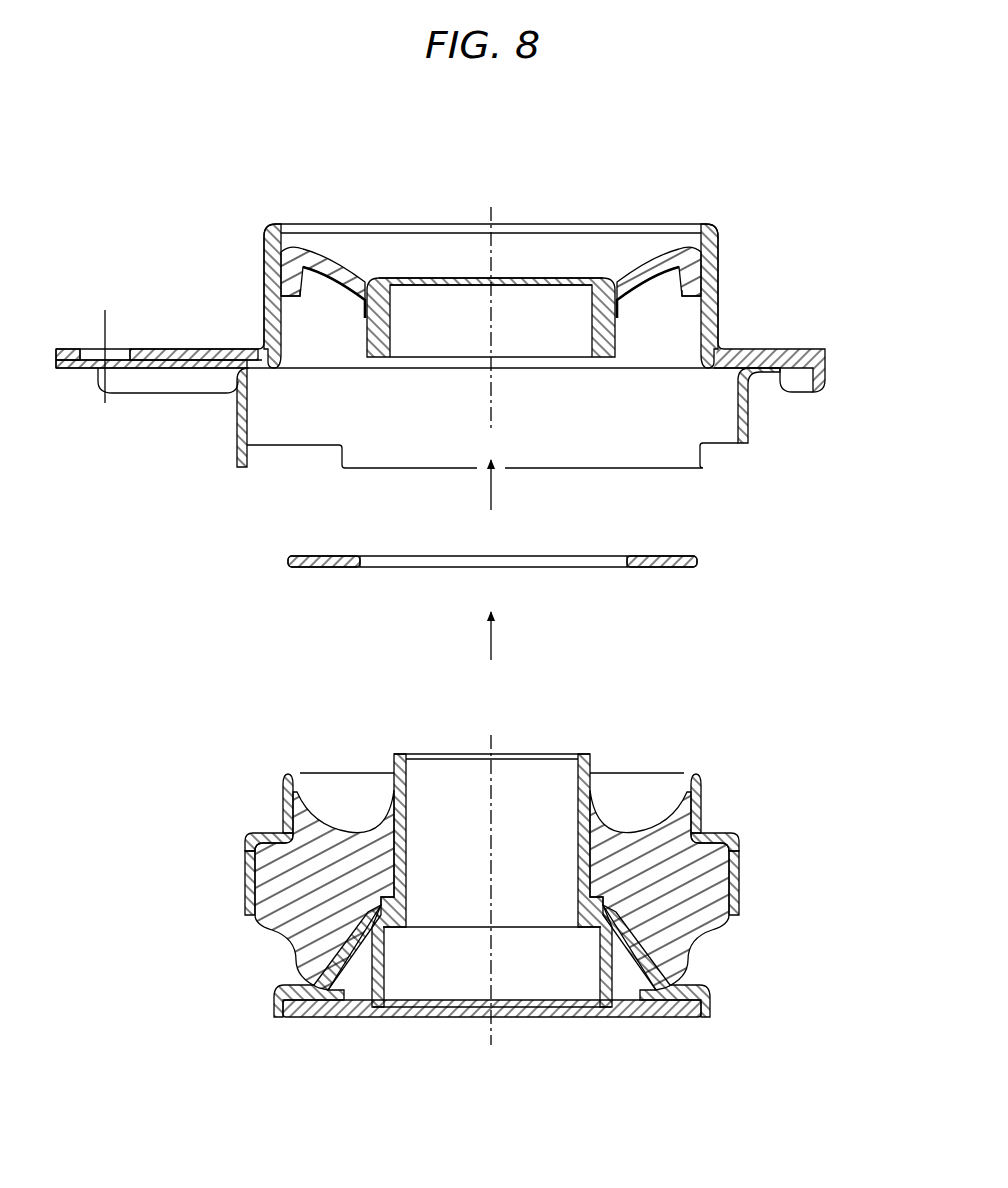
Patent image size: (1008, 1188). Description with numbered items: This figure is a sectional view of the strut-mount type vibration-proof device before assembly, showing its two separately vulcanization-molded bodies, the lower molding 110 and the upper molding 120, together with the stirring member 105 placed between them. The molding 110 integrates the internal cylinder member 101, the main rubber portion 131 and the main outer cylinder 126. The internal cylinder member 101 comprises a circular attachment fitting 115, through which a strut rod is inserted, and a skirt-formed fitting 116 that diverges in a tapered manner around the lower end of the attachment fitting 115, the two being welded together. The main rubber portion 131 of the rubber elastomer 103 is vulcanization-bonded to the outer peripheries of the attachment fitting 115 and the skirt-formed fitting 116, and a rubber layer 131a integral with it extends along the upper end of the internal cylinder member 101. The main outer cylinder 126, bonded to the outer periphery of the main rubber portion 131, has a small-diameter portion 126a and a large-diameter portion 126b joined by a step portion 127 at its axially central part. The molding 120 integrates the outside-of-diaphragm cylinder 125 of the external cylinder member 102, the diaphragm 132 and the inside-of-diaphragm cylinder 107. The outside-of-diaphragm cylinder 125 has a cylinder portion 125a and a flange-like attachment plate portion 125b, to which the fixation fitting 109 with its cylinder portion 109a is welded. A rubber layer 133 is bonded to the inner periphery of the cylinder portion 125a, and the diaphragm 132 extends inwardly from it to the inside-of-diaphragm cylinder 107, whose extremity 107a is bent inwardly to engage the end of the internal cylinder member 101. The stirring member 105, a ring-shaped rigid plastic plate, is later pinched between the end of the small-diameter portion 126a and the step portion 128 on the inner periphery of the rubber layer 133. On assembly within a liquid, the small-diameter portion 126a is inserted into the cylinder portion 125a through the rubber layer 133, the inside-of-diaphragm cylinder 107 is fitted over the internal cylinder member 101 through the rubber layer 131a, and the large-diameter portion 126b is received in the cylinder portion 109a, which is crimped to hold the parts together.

The internal cylinder member 101 is at (672, 1078).
The external cylinder member 102 is at (257, 233).
The rubber elastomer 103 is at (286, 937).
The stirring member 105 is at (678, 571).
The inside-of-diaphragm cylinder 107 is at (392, 310).
The top wall of inner tube 107a is at (596, 277).
The fixation fitting 109 is at (751, 425).
The cylinder portion 109a is at (238, 427).
The molding 110 is at (728, 790).
The attachment fitting 115 is at (580, 897).
The skirt-formed fitting 116 is at (648, 965).
The molding 120 is at (757, 220).
The outside-of-diaphragm cylinder 125 is at (845, 240).
The cylinder portion 125a is at (712, 270).
The attachment plate portion 125b is at (780, 350).
The main outer cylinder 126 is at (172, 745).
The small-diameter portion 126a is at (288, 790).
The large-diameter portion 126b is at (243, 873).
The step portion 127 is at (268, 830).
The step portion 128 is at (293, 298).
The main rubber portion 131 is at (683, 905).
The rubber layer 131a is at (594, 770).
The diaphragm 132 is at (347, 267).
The rubber layer 133 is at (700, 323).